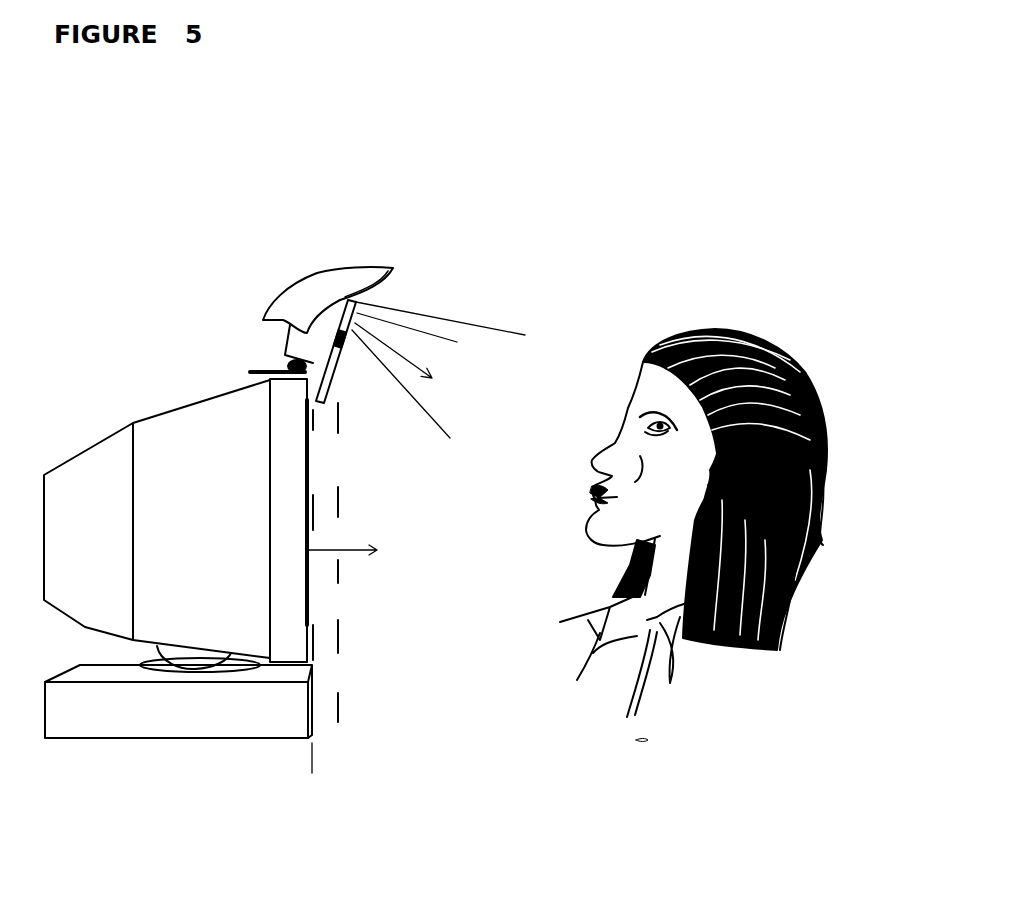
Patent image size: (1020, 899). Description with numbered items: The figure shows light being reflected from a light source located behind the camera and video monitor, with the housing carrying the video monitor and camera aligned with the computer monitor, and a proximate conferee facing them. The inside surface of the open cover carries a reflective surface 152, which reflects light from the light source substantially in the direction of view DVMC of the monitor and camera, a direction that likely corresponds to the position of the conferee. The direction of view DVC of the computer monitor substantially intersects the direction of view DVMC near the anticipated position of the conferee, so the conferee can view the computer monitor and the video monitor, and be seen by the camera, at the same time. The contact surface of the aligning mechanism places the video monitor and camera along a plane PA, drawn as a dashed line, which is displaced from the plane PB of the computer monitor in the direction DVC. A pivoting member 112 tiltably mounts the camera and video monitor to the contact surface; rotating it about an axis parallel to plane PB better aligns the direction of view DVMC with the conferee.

The pivoting member 112 is at (273, 366).
The reflective surface 152 is at (349, 250).
The direction of view of the monitor and camera DVMC is at (430, 362).
The plane of the video monitor and camera PA is at (350, 513).
The direction of view of the computer monitor DVC is at (372, 550).
The plane of the computer monitor PB is at (292, 775).